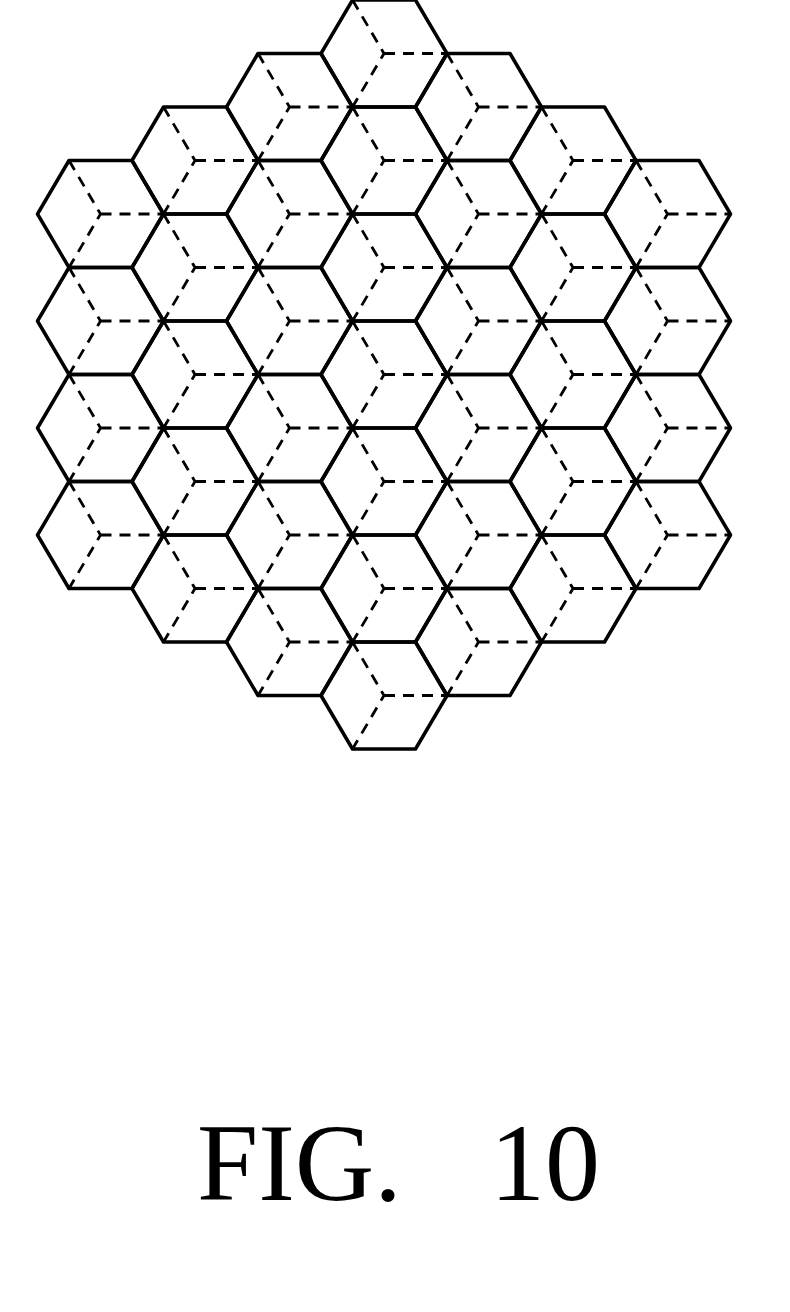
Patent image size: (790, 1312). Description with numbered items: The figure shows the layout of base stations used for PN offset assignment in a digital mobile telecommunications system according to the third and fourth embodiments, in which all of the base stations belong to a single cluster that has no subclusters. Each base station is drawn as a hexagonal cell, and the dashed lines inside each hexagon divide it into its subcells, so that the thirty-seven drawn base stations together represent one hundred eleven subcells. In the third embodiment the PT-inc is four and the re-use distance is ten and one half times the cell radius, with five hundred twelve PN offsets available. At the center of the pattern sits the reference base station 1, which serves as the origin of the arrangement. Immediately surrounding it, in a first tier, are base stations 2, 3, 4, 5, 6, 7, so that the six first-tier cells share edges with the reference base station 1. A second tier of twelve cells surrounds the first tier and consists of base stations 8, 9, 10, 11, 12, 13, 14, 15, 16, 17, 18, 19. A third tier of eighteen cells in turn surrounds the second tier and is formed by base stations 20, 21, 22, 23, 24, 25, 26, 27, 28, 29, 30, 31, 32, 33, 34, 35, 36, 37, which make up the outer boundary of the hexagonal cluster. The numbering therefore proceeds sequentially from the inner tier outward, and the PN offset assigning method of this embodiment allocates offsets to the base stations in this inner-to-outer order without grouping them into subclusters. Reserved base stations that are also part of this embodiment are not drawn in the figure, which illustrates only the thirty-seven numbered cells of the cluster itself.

The reference base station 1 is at (384, 374).
The base station 2 is at (384, 267).
The base station 3 is at (479, 321).
The base station 4 is at (479, 428).
The base station 5 is at (384, 481).
The base station 6 is at (290, 428).
The base station 7 is at (290, 321).
The base station 8 is at (290, 214).
The base station 9 is at (384, 160).
The base station 10 is at (479, 214).
The base station 11 is at (573, 267).
The base station 12 is at (573, 374).
The base station 13 is at (573, 481).
The base station 14 is at (479, 535).
The base station 15 is at (384, 588).
The base station 16 is at (290, 535).
The base station 17 is at (195, 481).
The base station 18 is at (195, 374).
The base station 19 is at (195, 267).
The base station 20 is at (195, 160).
The base station 21 is at (290, 107).
The base station 22 is at (384, 53).
The base station 23 is at (479, 107).
The base station 24 is at (573, 160).
The base station 25 is at (668, 214).
The base station 26 is at (668, 321).
The base station 27 is at (668, 428).
The base station 28 is at (668, 535).
The base station 29 is at (573, 588).
The base station 30 is at (479, 642).
The base station 31 is at (384, 695).
The base station 32 is at (290, 642).
The base station 33 is at (195, 588).
The base station 34 is at (101, 535).
The base station 35 is at (101, 428).
The base station 36 is at (101, 321).
The base station 37 is at (101, 214).